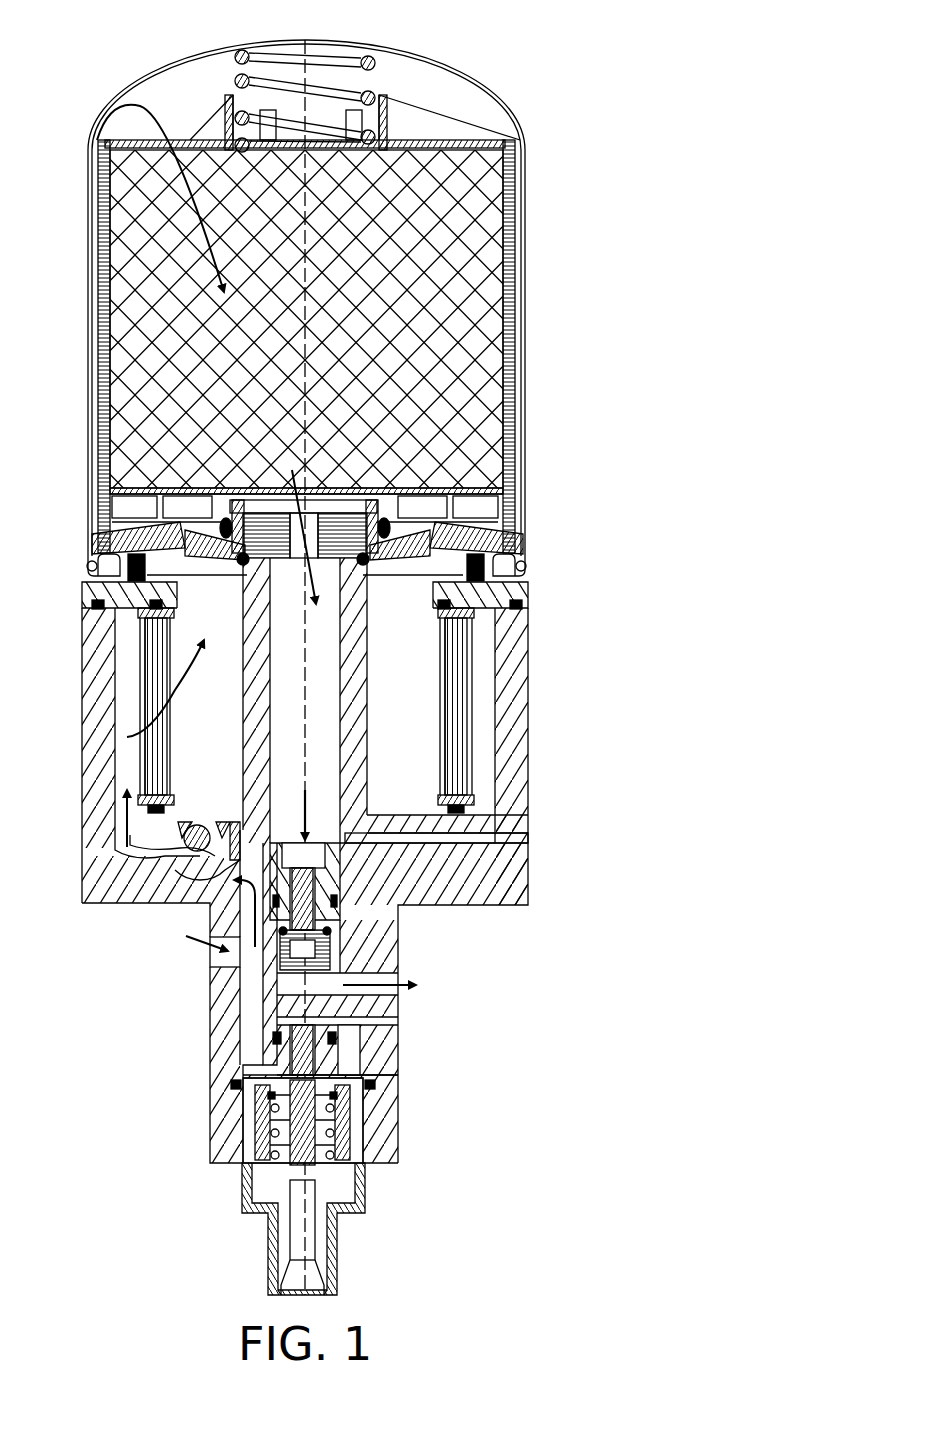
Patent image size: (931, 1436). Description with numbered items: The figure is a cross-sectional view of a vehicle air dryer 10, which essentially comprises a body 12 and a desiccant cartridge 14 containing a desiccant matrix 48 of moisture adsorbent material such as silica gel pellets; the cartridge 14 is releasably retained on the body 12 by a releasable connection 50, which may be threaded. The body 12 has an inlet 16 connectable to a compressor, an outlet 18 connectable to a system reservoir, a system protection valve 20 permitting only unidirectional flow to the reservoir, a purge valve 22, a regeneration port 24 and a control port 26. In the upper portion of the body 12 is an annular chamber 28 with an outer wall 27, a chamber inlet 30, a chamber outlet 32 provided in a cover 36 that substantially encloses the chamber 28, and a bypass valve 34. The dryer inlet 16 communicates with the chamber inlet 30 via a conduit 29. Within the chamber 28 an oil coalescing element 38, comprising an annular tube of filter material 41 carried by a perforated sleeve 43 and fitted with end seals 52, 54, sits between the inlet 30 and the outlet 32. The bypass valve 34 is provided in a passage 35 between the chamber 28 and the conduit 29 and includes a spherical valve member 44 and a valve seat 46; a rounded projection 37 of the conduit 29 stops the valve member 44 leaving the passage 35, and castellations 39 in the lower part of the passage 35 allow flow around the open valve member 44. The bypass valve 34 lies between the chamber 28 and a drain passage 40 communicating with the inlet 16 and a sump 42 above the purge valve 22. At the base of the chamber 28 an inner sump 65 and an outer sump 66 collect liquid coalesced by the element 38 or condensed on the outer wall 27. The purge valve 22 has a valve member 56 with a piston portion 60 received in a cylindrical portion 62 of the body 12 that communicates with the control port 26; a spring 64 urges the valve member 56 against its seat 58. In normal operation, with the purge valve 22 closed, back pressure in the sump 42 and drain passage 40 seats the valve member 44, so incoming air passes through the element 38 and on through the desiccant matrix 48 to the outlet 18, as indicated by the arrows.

The air dryer 10 is at (540, 86).
The body 12 is at (528, 898).
The desiccant cartridge 14 is at (470, 80).
The inlet 16 is at (215, 957).
The outlet 18 is at (400, 974).
The system protection valve 20 is at (328, 843).
The purge valve 22 is at (358, 1178).
The regeneration port 24 is at (528, 840).
The control port 26 is at (398, 1019).
The outer wall 27 is at (112, 688).
The annular chamber 28 is at (112, 633).
The conduit 29 is at (128, 893).
The chamber inlet 30 is at (114, 822).
The chamber outlet 32 is at (480, 548).
The bypass valve 34 is at (212, 815).
The passage 35 is at (193, 893).
The cover 36 is at (529, 595).
The rounded projection 37 is at (189, 933).
The oil coalescing element 38 is at (437, 670).
The castellations 39 is at (276, 822).
The drain passage 40 is at (240, 1001).
The filter material 41 is at (466, 680).
The sump 42 is at (360, 1080).
The perforated sleeve 43 is at (440, 708).
The spherical valve member 44 is at (178, 852).
The valve seat 46 is at (195, 822).
The desiccant matrix 48 is at (512, 208).
The releasable connection 50 is at (455, 520).
The end seal 52 is at (470, 612).
The end seal 54 is at (440, 790).
The valve member 56 is at (243, 1070).
The seat 58 is at (244, 1110).
The piston portion 60 is at (368, 1041).
The cylindrical portion 62 is at (276, 1024).
The spring 64 is at (375, 1122).
The inner sump 65 is at (398, 812).
The outer sump 66 is at (496, 814).